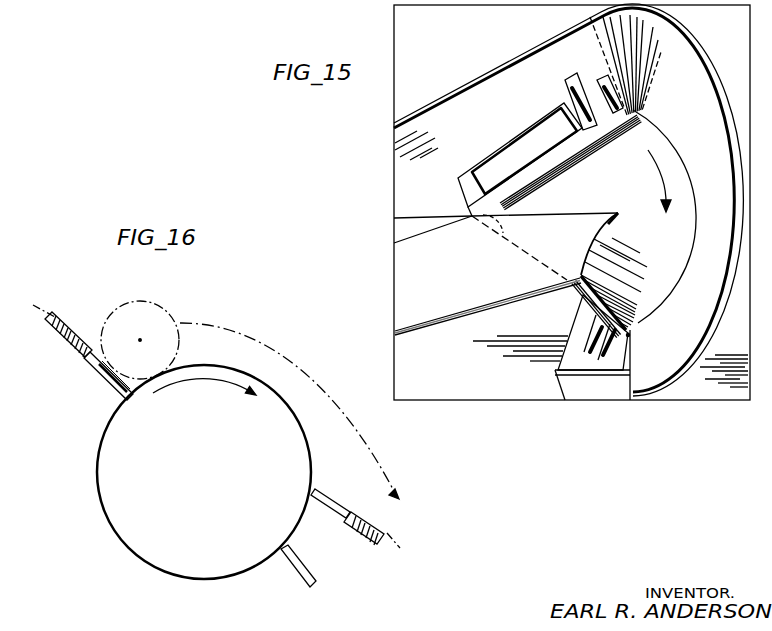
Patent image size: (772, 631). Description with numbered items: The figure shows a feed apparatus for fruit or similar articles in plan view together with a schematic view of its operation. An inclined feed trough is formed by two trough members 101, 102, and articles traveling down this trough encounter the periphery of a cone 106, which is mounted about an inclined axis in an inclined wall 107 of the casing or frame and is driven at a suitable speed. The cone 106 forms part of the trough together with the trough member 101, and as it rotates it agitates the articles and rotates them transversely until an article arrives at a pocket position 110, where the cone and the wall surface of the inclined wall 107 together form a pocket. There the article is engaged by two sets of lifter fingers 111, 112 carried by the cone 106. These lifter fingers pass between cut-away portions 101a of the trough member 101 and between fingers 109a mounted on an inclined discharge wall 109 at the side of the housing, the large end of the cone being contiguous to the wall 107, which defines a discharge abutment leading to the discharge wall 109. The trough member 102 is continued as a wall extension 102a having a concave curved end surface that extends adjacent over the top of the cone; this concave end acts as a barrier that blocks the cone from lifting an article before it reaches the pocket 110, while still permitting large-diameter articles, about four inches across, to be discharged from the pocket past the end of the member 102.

In FIG. 15, the trough member 101 is at (433, 190).
In FIG. 16, the trough member 101 is at (57, 317).
In FIG. 15, the cut-away portions 101a is at (565, 83).
In FIG. 16, the cut-away portions 101a is at (93, 356).
In FIG. 15, the trough member 102 is at (470, 271).
In FIG. 15, the wall extension 102a is at (594, 243).
In FIG. 15, the cone 106 is at (666, 260).
In FIG. 16, the cone 106 is at (150, 550).
In FIG. 15, the inclined wall 107 is at (731, 241).
In FIG. 15, the inclined discharge wall 109 is at (617, 383).
In FIG. 16, the inclined discharge wall 109 is at (363, 536).
In FIG. 15, the fingers 109a is at (608, 362).
In FIG. 16, the fingers 109a is at (338, 512).
In FIG. 15, the pocket position 110 is at (592, 112).
In FIG. 15, the lifter fingers 111 is at (593, 128).
In FIG. 16, the lifter fingers 111 is at (75, 381).
In FIG. 15, the lifter fingers 112 is at (634, 114).
In FIG. 16, the lifter fingers 112 is at (112, 378).